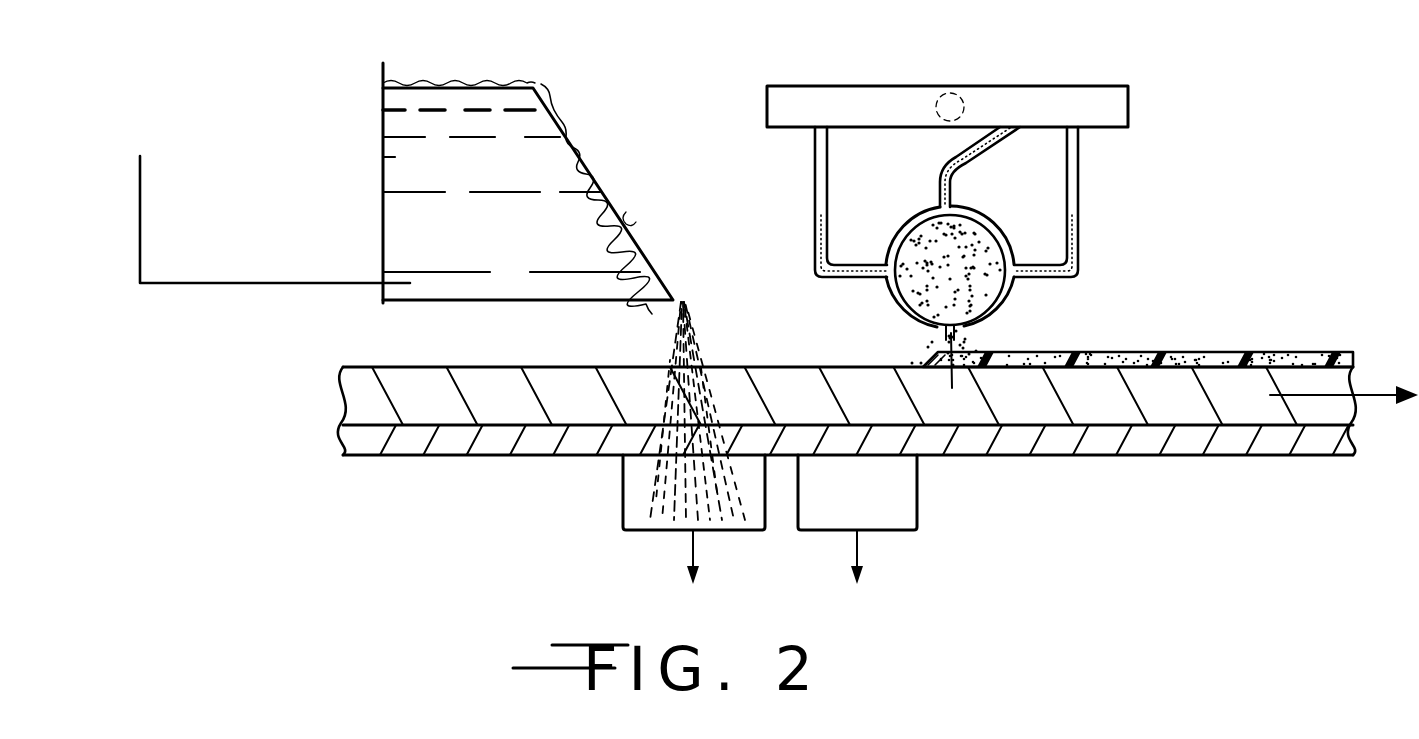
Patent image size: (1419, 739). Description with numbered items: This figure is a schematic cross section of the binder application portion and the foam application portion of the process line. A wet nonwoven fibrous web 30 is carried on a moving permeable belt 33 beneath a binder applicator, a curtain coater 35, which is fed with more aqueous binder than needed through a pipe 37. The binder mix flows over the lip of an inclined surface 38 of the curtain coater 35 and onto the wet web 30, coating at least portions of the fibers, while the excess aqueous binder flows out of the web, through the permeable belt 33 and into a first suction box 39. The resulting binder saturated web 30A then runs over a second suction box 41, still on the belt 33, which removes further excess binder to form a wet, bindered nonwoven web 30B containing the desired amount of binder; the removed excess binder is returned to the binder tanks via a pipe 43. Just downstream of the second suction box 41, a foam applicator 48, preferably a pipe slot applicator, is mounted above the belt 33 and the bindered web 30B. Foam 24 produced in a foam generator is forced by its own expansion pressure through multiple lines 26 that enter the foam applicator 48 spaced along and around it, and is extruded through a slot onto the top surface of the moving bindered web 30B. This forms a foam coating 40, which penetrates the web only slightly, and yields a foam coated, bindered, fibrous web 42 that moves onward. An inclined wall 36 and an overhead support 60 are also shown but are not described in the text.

The foam 24 is at (962, 249).
The multiple lines 26 is at (938, 182).
The wet nonwoven fibrous web 30 is at (402, 385).
The binder saturated web 30A is at (783, 379).
The wet, bindered nonwoven web 30B is at (920, 390).
The second moving screen 33 is at (396, 461).
The curtain coater 35 is at (383, 143).
The inclined hopper wall 36 is at (613, 174).
The pipe 37 is at (140, 205).
The inclined surface 38 is at (634, 225).
The first suction box 39 is at (647, 511).
The foam coating 40 is at (1152, 350).
The second suction box 41 is at (838, 512).
The foam coated, bindered, fibrous web 42 is at (1270, 350).
The pipe 43 is at (690, 548).
The foam applicator 48 is at (888, 291).
The support manifold 60 is at (1057, 105).